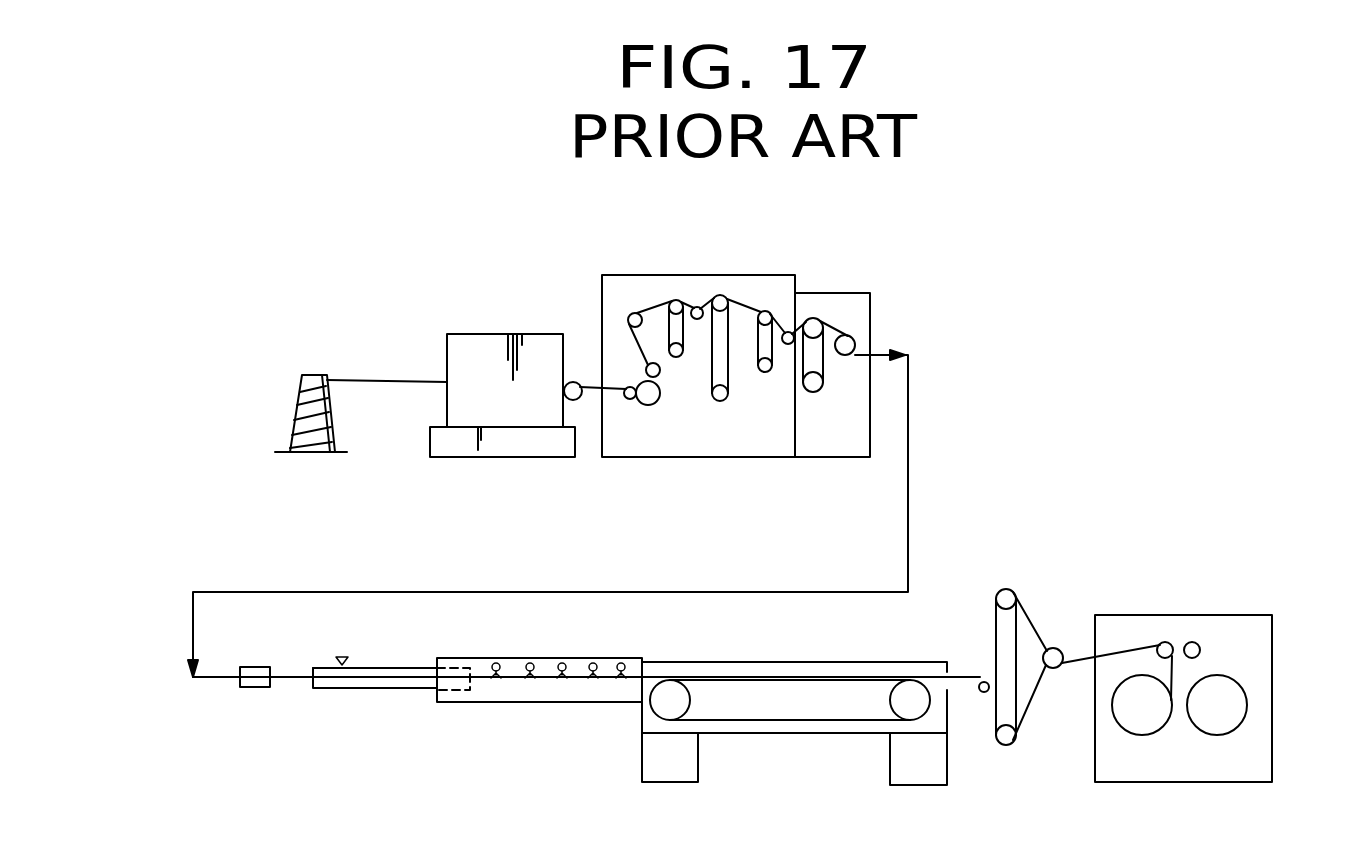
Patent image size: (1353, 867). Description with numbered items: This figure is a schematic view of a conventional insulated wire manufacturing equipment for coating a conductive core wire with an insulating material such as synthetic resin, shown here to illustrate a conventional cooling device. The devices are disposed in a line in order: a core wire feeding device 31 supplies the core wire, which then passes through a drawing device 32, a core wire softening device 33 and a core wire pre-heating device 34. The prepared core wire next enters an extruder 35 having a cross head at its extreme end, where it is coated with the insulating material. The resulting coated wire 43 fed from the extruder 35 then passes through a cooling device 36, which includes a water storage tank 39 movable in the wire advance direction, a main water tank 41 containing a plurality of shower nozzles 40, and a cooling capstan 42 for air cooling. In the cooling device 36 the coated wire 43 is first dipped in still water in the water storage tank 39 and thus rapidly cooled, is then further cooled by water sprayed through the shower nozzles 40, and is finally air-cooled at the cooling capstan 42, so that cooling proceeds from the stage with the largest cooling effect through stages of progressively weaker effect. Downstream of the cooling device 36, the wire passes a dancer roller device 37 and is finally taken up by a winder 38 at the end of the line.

The core wire feeding device 31 is at (302, 378).
The drawing device 32 is at (478, 334).
The core wire softening device 33 is at (715, 275).
The core wire pre-heating device 34 is at (838, 293).
The extruder 35 is at (252, 690).
The cooling device 36 is at (460, 746).
The dancer roller device 37 is at (1014, 595).
The winder 38 is at (1210, 615).
The water storage tank 39 is at (357, 690).
The shower nozzles 40 is at (594, 662).
The main water tank 41 is at (600, 702).
The cooling capstan 42 is at (777, 733).
The coated wire 43 is at (390, 668).